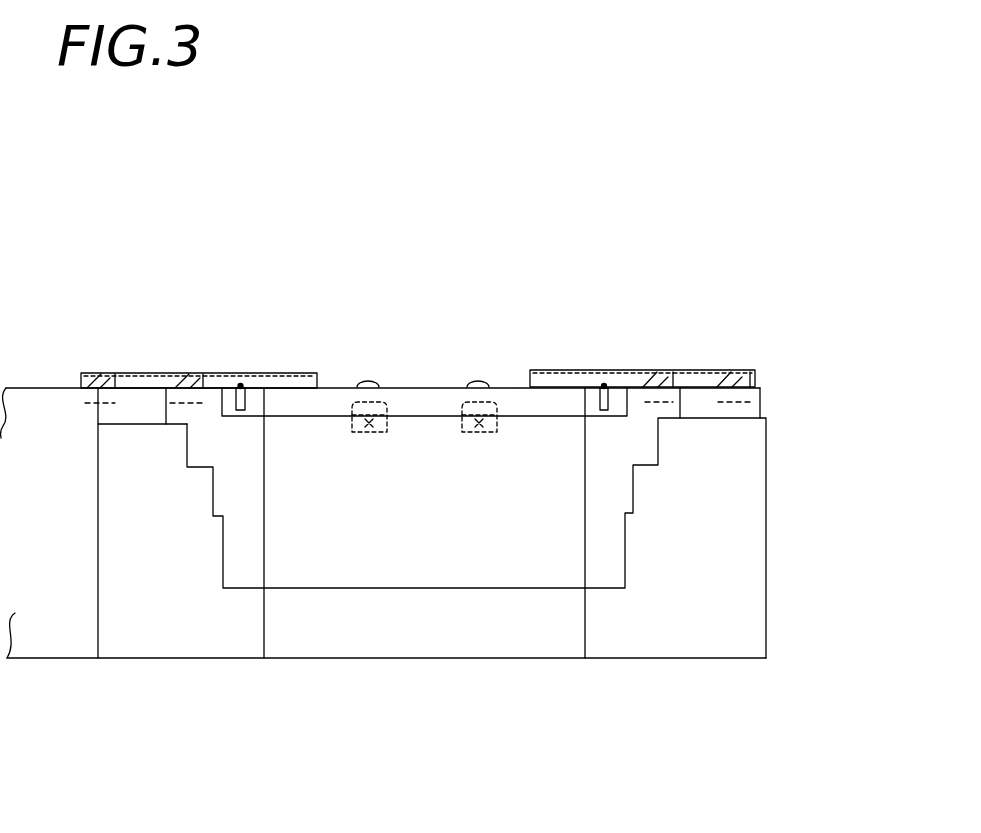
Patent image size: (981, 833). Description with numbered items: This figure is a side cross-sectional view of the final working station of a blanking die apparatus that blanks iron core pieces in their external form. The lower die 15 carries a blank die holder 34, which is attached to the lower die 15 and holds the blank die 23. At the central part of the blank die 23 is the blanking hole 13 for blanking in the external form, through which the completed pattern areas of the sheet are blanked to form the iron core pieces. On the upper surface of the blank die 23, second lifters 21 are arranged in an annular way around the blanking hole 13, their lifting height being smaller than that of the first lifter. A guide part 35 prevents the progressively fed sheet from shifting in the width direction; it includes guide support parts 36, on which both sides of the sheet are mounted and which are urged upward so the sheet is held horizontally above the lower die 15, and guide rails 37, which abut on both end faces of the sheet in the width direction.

The blanking hole for blanking in the external form 13 is at (583, 405).
The lower die 15 is at (707, 667).
The second lifter 21 is at (240, 383).
The blank die 23 is at (256, 410).
The blank die holder 34 is at (240, 560).
The guide part 35 is at (760, 335).
The guide support part 36 is at (175, 373).
The guide rail 37 is at (215, 373).